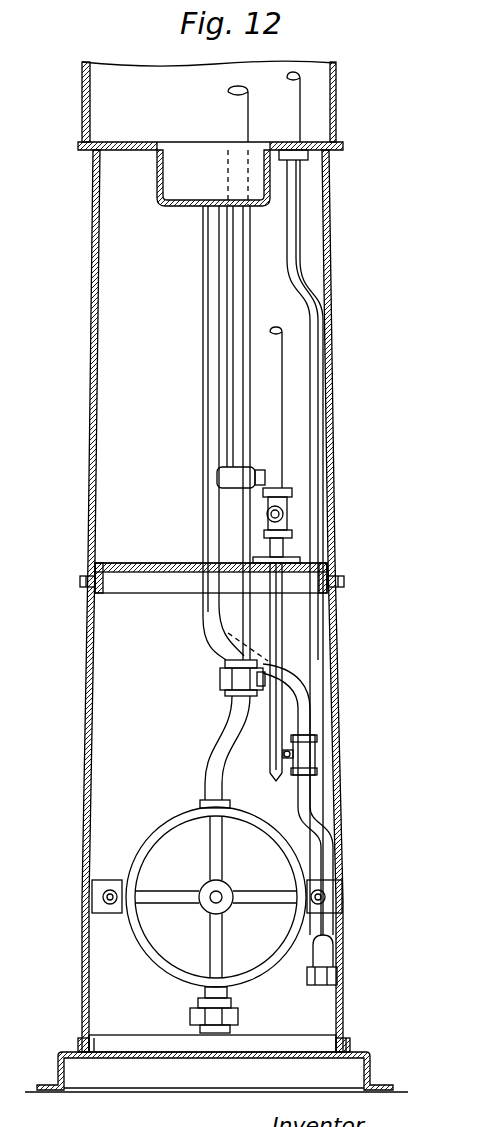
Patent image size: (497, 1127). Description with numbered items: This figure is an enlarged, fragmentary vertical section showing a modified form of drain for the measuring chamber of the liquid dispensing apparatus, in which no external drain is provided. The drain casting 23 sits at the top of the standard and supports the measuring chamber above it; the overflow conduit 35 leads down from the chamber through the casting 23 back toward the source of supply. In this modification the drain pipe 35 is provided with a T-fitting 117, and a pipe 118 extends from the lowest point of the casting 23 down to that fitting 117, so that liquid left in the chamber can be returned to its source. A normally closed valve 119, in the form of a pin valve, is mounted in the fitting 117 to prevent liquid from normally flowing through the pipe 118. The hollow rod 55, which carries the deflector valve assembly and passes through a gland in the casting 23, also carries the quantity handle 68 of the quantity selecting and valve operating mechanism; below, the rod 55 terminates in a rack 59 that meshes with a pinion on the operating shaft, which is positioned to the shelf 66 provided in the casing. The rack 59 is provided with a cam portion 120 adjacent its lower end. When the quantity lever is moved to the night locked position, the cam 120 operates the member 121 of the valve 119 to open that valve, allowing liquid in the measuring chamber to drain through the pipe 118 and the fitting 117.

The drain casting 23 is at (159, 207).
The pipe 118 is at (206, 352).
The hollow rod 55 is at (283, 413).
The quantity handle 68 is at (291, 517).
The shelf 66 is at (157, 573).
The rack 59 is at (284, 610).
The overflow conduit 35 is at (324, 669).
The normally closed valve 119 is at (326, 742).
The member 121 is at (314, 775).
The cam portion 120 is at (277, 782).
The T-fitting 117 is at (336, 953).